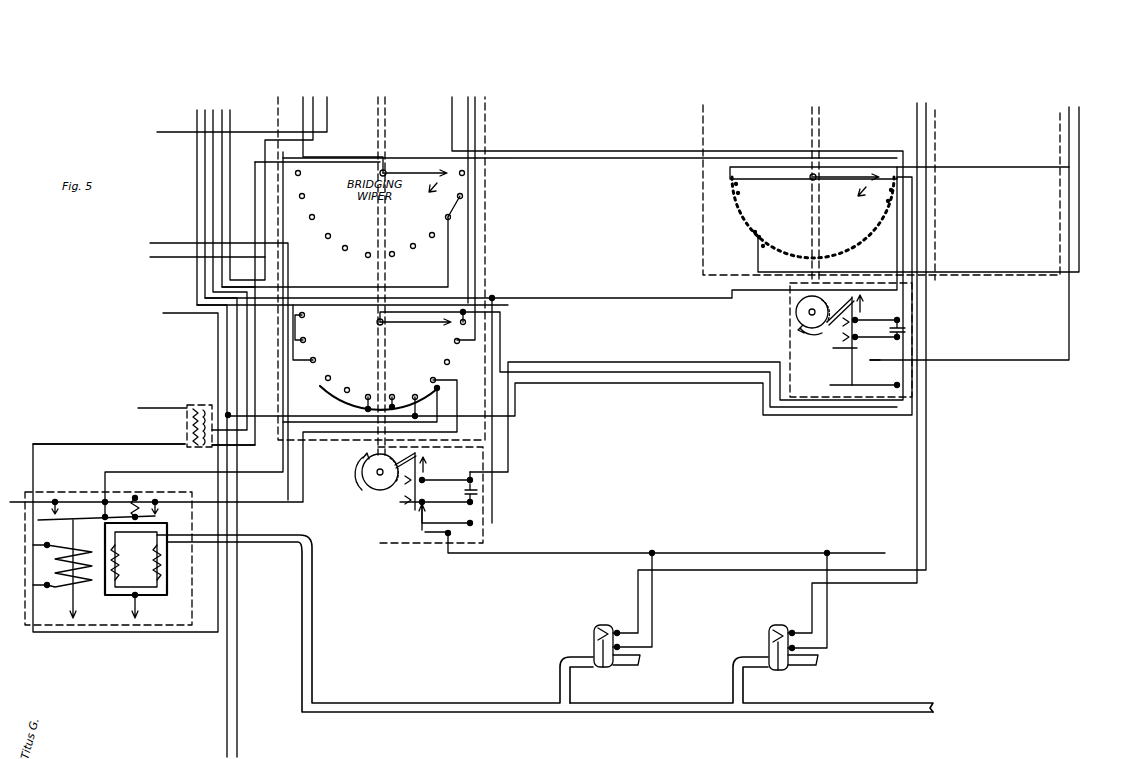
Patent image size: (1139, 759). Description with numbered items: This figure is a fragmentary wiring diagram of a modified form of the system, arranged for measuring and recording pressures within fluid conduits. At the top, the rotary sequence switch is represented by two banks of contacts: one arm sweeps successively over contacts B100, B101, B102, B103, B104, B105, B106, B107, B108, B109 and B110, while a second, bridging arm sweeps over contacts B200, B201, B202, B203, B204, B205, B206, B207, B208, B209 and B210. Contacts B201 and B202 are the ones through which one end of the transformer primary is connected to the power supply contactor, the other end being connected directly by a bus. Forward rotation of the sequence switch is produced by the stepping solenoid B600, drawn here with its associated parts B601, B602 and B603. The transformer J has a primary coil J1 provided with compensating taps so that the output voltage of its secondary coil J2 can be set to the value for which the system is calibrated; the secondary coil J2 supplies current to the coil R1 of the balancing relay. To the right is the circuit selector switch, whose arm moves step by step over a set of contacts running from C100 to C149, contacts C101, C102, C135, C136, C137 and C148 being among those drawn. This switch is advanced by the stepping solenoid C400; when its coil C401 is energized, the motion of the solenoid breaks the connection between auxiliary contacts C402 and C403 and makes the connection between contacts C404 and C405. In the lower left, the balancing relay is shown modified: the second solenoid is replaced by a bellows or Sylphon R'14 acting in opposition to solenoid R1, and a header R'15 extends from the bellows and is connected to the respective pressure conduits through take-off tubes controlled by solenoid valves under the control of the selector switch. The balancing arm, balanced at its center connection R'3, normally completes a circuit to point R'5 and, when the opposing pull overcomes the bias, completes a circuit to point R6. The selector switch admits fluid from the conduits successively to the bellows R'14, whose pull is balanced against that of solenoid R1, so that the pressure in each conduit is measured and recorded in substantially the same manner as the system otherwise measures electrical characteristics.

The contact of rotary sequence switch B200 is at (490, 173).
The contact of rotary sequence switch B210 is at (322, 196).
The contact of rotary sequence switch B209 is at (328, 212).
The contact of rotary sequence switch B208 is at (343, 231).
The contact of rotary sequence switch B207 is at (328, 253).
The contact of rotary sequence switch B206 is at (368, 257).
The contact of rotary sequence switch B205 is at (392, 257).
The contact of rotary sequence switch B204 is at (415, 248).
The contact of rotary sequence switch B203 is at (414, 231).
The contact of rotary sequence switch B202 is at (450, 216).
The contact of rotary sequence switch B201 is at (462, 196).
The contact of rotary sequence switch B100 is at (302, 315).
The contact of rotary sequence switch B110 is at (321, 333).
The contact of rotary sequence switch B109 is at (324, 353).
The contact of rotary sequence switch B108 is at (329, 376).
The contact of rotary sequence switch B107 is at (347, 388).
The contact of rotary sequence switch B106 is at (370, 394).
The contact of rotary sequence switch B105 is at (392, 395).
The contact of rotary sequence switch B104 is at (428, 378).
The contact of rotary sequence switch B103 is at (420, 368).
The contact of rotary sequence switch B102 is at (445, 360).
The contact of rotary sequence switch B101 is at (455, 341).
The stepping solenoid B600 is at (382, 481).
The interrupter contact B601 is at (449, 487).
The interrupter contact B602 is at (472, 523).
The interrupter spring B603 is at (446, 535).
The contact of circuit selector switch C100 is at (739, 173).
The contact of circuit selector switch C149 is at (738, 184).
The contact of circuit selector switch C148 is at (740, 193).
The contact of circuit selector switch C137 is at (756, 230).
The contact of circuit selector switch C136 is at (760, 236).
The contact of circuit selector switch C135 is at (764, 245).
The contact of circuit selector switch C101 is at (890, 188).
The contact of circuit selector switch C102 is at (887, 200).
The stepping solenoid C400 is at (802, 340).
The coil of stepping solenoid C401 is at (880, 328).
The auxiliary contact C402 is at (877, 343).
The auxiliary contact C403 is at (855, 352).
The auxiliary contact C404 is at (879, 367).
The auxiliary contact C405 is at (856, 378).
The transformer J is at (175, 418).
The primary coil J1 is at (212, 447).
The secondary coil J2 is at (185, 445).
The relay contact point R6 is at (64, 505).
The center connection of balancing arm R'3 is at (121, 508).
The relay contact point R'5 is at (165, 508).
The balancing relay coil R1 is at (92, 555).
The bellows or Sylphon R'14 is at (136, 570).
The header R'15 is at (545, 638).